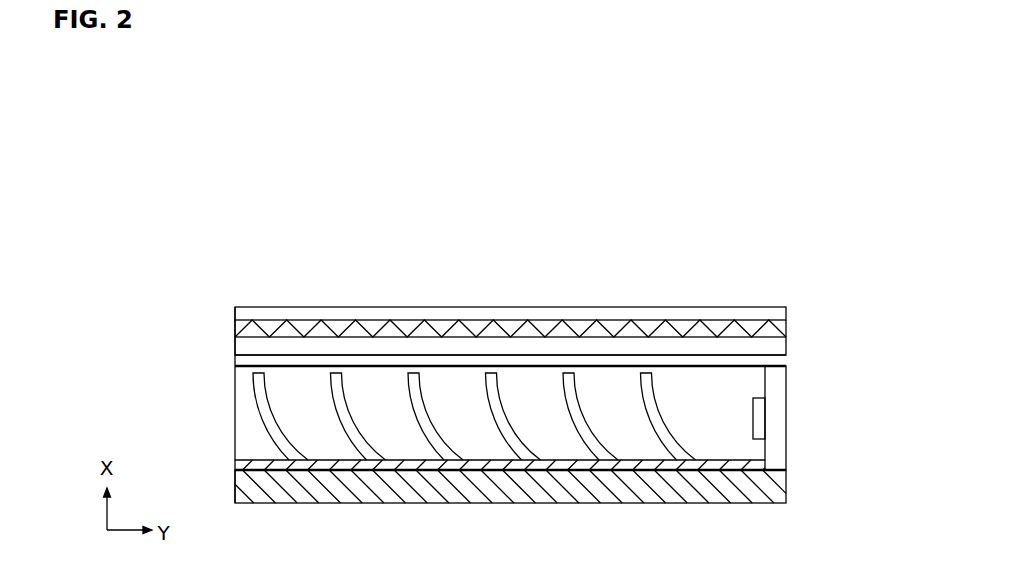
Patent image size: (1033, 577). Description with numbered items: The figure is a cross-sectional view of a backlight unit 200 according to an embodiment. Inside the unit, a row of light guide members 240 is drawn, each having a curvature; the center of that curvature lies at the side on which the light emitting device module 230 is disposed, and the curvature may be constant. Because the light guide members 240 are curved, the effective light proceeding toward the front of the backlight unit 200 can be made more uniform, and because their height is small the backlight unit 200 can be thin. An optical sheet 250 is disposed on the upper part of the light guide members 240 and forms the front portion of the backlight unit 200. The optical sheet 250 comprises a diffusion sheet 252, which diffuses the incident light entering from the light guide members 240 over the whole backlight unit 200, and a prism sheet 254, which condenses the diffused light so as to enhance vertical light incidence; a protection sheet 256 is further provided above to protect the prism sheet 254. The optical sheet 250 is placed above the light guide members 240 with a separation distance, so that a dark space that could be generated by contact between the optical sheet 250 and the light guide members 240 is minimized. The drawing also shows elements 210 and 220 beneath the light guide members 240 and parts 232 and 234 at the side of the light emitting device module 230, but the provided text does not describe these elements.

The backlight unit 200 is at (847, 228).
The substrate 210 is at (262, 502).
The reflective layer 220 is at (262, 460).
The light emitting device module 230 is at (580, 405).
The side wall 232 is at (779, 447).
The light source 234 is at (760, 411).
The light guide member 240 is at (433, 402).
The optical sheet 250 is at (428, 307).
The diffusion sheet 252 is at (245, 365).
The prism sheet 254 is at (240, 329).
The protection sheet 256 is at (237, 311).